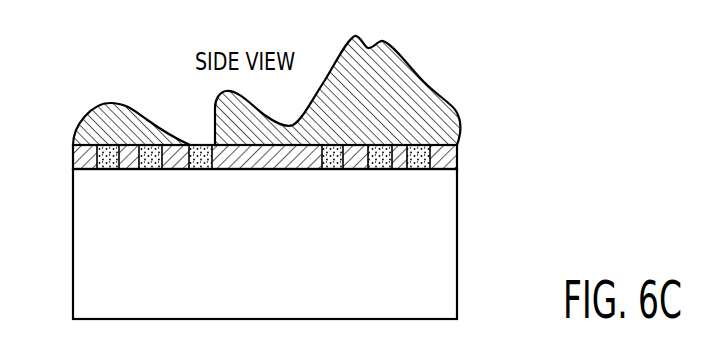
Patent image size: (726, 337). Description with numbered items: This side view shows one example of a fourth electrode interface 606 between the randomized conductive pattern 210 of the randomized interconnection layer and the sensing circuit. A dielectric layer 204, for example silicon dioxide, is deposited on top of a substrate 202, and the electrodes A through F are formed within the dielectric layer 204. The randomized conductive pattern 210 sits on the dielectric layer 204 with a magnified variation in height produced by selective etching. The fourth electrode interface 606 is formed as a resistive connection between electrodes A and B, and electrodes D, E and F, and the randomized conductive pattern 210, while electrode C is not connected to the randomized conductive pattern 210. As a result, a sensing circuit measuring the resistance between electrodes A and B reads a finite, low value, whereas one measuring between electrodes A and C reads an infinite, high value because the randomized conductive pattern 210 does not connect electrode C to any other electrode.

The fourth electrode interface 606 is at (97, 82).
The randomized conductive pattern 210 is at (423, 79).
The dielectric layer 204 is at (455, 153).
The substrate 202 is at (438, 250).